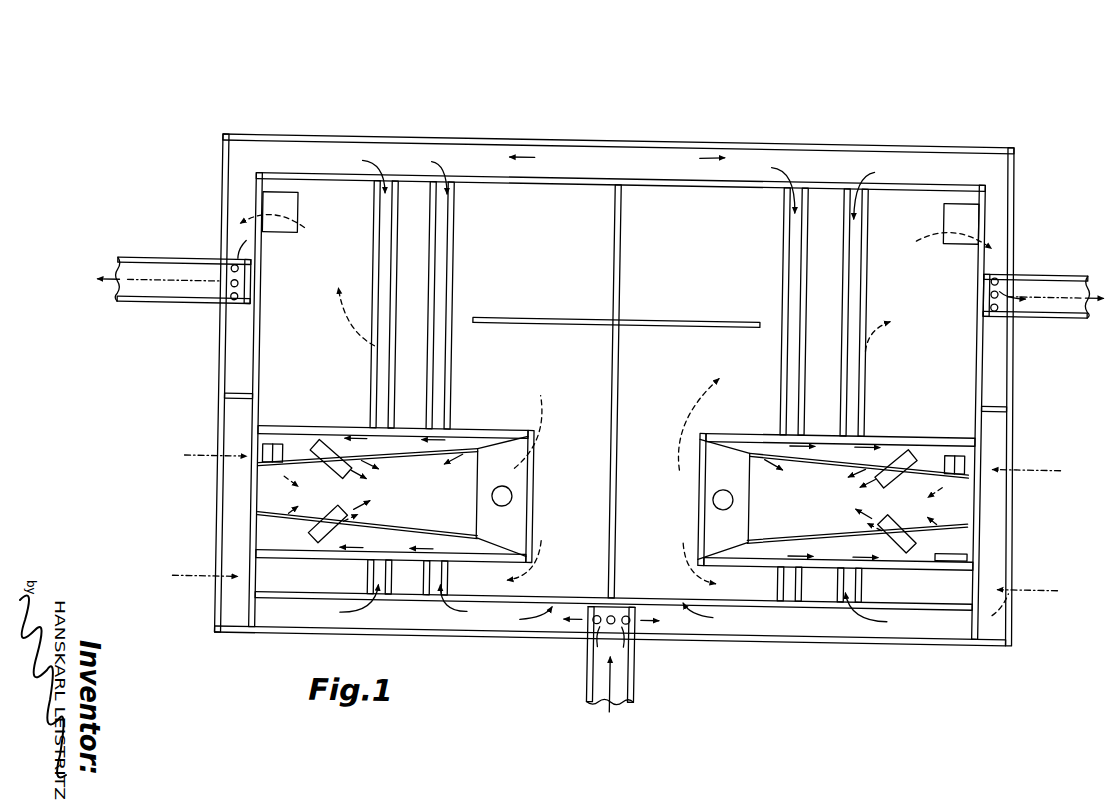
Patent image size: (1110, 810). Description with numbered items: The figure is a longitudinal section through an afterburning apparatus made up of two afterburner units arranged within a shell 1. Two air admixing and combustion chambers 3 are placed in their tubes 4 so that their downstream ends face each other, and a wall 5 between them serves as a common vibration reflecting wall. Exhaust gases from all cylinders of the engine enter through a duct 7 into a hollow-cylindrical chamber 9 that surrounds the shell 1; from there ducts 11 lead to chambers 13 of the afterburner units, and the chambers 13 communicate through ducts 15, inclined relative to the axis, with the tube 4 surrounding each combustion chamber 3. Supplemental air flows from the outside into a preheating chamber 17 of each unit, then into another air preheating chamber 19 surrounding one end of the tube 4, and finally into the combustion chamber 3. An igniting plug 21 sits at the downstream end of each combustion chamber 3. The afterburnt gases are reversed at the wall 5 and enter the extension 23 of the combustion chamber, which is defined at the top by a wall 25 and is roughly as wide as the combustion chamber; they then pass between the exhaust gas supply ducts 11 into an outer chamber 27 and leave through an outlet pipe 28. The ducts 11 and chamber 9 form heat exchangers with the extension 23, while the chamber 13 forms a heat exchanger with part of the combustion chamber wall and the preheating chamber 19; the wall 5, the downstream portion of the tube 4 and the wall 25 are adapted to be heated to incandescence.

The shell 1 is at (678, 172).
The air admixing and combustion chamber 3 is at (420, 511).
The tube 4 is at (424, 452).
The wall 5 is at (628, 377).
The duct 7 is at (609, 655).
The hollow-cylindrical chamber 9 is at (562, 156).
The ducts 11 is at (795, 237).
The chamber 13 is at (895, 436).
The ducts 15 is at (928, 450).
The preheating chamber 17 is at (1001, 490).
The air preheating chamber 19 is at (972, 525).
The igniting plug 21 is at (518, 499).
The extension of the combustion chamber 23 is at (740, 404).
The wall 25 is at (676, 313).
The outer chamber 27 is at (1004, 358).
The outlet pipe 28 is at (1053, 272).